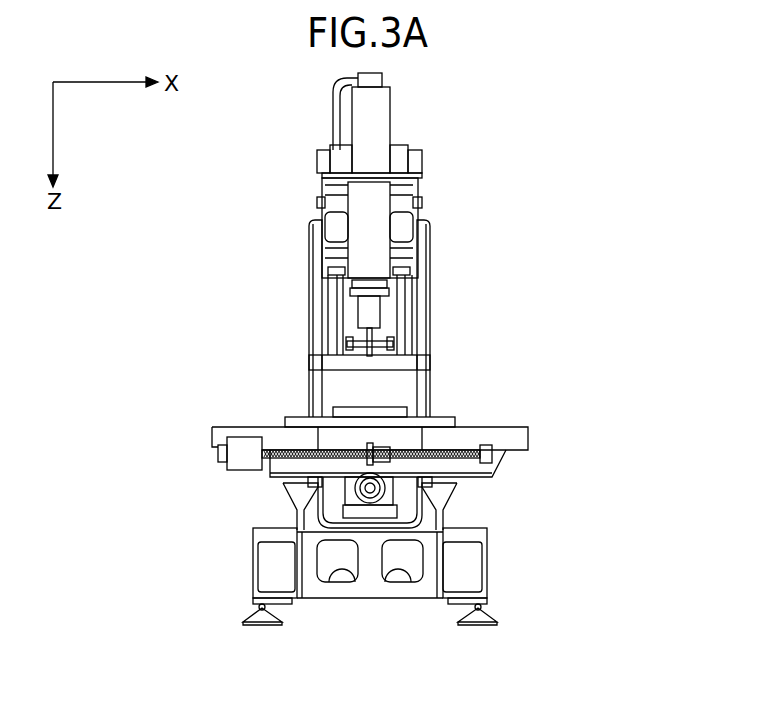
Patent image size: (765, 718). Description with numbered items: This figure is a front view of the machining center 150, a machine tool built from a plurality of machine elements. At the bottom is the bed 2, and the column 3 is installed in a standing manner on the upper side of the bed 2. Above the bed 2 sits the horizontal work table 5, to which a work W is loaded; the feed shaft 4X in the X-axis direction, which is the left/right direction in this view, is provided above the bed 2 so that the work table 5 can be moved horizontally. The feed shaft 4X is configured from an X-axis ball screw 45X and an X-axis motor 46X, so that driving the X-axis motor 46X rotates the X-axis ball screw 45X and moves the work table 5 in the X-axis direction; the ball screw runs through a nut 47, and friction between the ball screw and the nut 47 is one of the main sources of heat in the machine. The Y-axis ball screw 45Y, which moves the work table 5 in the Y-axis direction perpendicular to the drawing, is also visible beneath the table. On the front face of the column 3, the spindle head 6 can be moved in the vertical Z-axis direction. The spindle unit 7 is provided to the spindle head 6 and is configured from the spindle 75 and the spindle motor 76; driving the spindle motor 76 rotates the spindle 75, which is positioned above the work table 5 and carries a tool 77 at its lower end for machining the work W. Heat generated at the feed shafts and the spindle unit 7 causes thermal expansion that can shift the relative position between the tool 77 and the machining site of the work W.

The machining center 150 is at (585, 108).
The spindle unit 7 is at (453, 213).
The spindle motor 76 is at (378, 118).
The spindle head 6 is at (348, 232).
The spindle 75 is at (382, 290).
The tool 77 is at (373, 358).
The column 3 is at (309, 287).
The work W is at (350, 405).
The work table 5 is at (297, 417).
The feed shaft in the X-axis direction 4X is at (245, 482).
The X-axis motor 46X is at (238, 437).
The X-axis ball screw 45X is at (452, 460).
The nut 47 is at (378, 447).
The Y-axis ball screw 45Y is at (370, 492).
The bed 2 is at (487, 565).